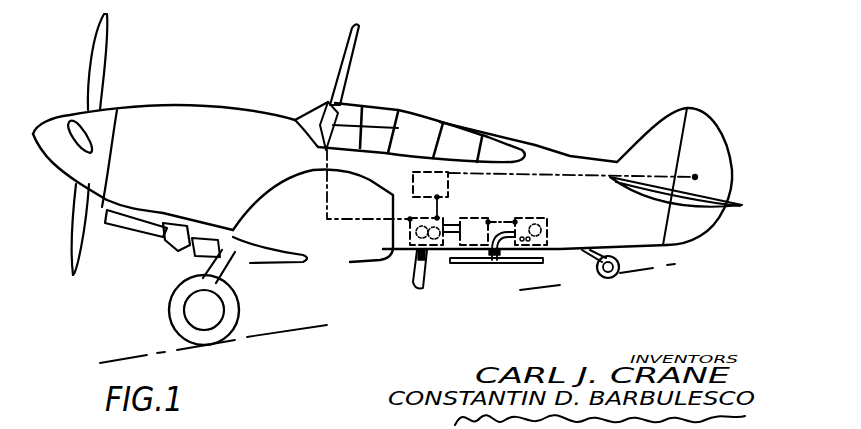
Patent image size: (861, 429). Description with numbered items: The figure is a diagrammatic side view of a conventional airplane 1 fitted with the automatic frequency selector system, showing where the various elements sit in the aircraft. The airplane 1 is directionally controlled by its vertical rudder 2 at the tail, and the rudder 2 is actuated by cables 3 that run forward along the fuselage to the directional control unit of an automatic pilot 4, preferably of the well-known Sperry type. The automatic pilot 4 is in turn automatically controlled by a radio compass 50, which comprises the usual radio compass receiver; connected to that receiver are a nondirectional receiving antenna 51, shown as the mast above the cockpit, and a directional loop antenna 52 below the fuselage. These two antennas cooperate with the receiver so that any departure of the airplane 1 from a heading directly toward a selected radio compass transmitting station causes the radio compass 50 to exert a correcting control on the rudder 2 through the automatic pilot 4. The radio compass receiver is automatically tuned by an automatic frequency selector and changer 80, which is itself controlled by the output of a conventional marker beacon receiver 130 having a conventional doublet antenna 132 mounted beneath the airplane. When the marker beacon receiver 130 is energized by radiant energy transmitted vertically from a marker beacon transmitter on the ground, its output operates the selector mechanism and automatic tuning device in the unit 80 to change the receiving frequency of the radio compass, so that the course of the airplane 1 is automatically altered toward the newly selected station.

The airplane 1 is at (245, 127).
The vertical rudder 2 is at (700, 125).
The cables 3 is at (522, 177).
The automatic pilot 4 is at (449, 188).
The radio compass 50 is at (426, 218).
The nondirectional receiving antenna 51 is at (353, 47).
The directional loop antenna 52 is at (424, 283).
The automatic frequency selector and changer 80 is at (478, 218).
The marker beacon receiver 130 is at (536, 218).
The doublet antenna 132 is at (500, 265).